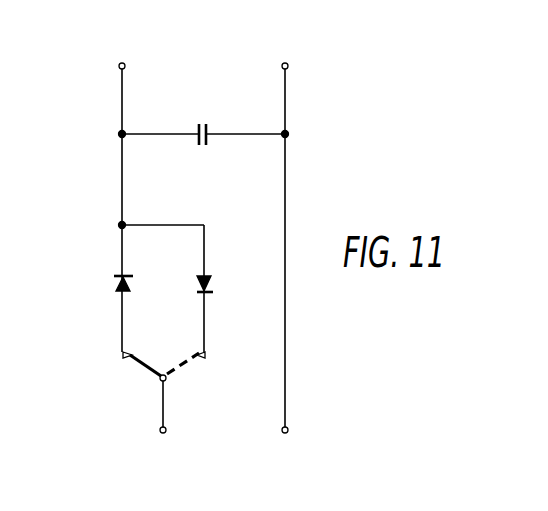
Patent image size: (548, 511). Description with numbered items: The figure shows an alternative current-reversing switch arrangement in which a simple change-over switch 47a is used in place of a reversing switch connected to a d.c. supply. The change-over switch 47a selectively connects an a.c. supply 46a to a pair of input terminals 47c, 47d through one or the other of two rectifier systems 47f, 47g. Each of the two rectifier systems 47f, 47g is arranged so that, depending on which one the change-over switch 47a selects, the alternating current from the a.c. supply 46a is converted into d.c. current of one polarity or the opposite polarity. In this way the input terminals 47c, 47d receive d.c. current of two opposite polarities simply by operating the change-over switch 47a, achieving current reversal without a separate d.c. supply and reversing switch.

The input terminal 47c is at (119, 67).
The input terminal 47d is at (289, 68).
The rectifier system 47f is at (113, 285).
The rectifier system 47g is at (211, 283).
The change-over switch 47a is at (143, 368).
The a.c. supply 46a is at (232, 435).